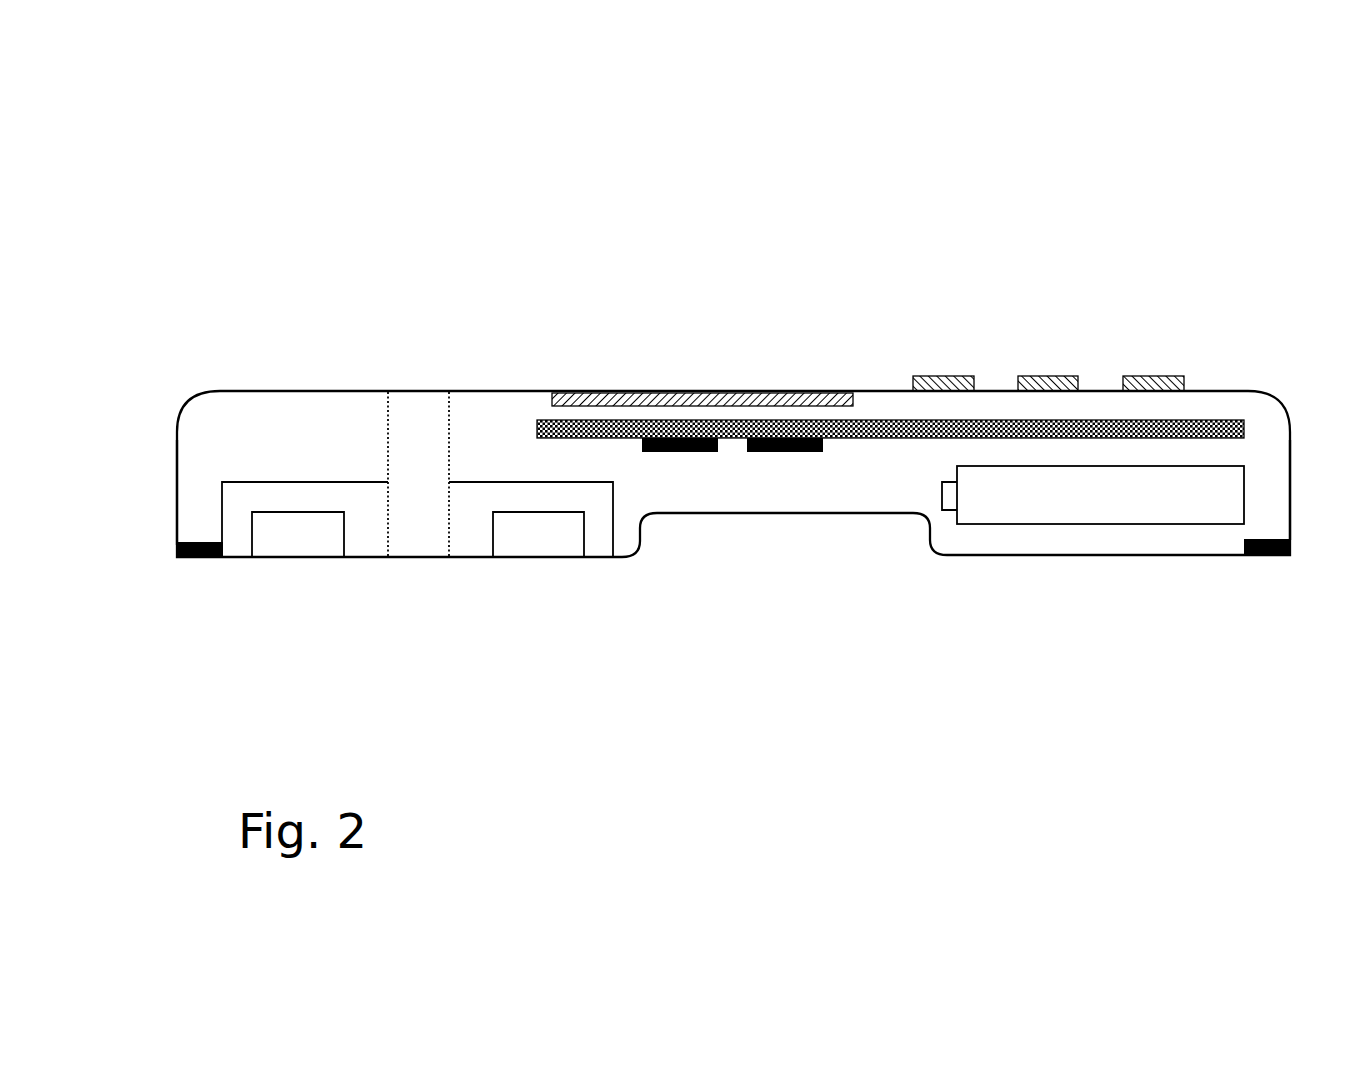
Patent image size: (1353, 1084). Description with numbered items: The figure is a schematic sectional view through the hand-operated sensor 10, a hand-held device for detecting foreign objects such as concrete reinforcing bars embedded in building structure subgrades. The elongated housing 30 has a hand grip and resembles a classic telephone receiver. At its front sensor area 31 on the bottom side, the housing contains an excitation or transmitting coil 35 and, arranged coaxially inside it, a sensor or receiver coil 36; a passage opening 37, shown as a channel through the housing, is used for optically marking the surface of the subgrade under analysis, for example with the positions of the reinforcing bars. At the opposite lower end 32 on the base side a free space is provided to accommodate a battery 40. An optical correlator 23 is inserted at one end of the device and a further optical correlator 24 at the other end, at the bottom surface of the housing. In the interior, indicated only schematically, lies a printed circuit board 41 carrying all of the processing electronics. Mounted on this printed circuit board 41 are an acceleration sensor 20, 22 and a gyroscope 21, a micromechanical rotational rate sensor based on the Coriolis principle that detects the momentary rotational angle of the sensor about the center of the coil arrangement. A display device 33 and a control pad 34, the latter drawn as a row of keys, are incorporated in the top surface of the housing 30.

The hand-operated sensor 10 is at (615, 358).
The acceleration sensor 20 is at (790, 452).
The gyroscope 21 is at (673, 452).
The acceleration sensor 22 is at (785, 445).
The optical correlator 23 is at (198, 557).
The optical correlator 24 is at (1265, 557).
The housing 30 is at (307, 391).
The front sensor area 31 is at (192, 513).
The lower end 32 is at (1288, 505).
The display device 33 is at (737, 393).
The control pad 34 is at (903, 358).
The transmitting coil 35 is at (238, 543).
The receiver coil 36 is at (307, 543).
The passage opening 37 is at (422, 413).
The battery 40 is at (1185, 508).
The printed circuit board 41 is at (1212, 420).